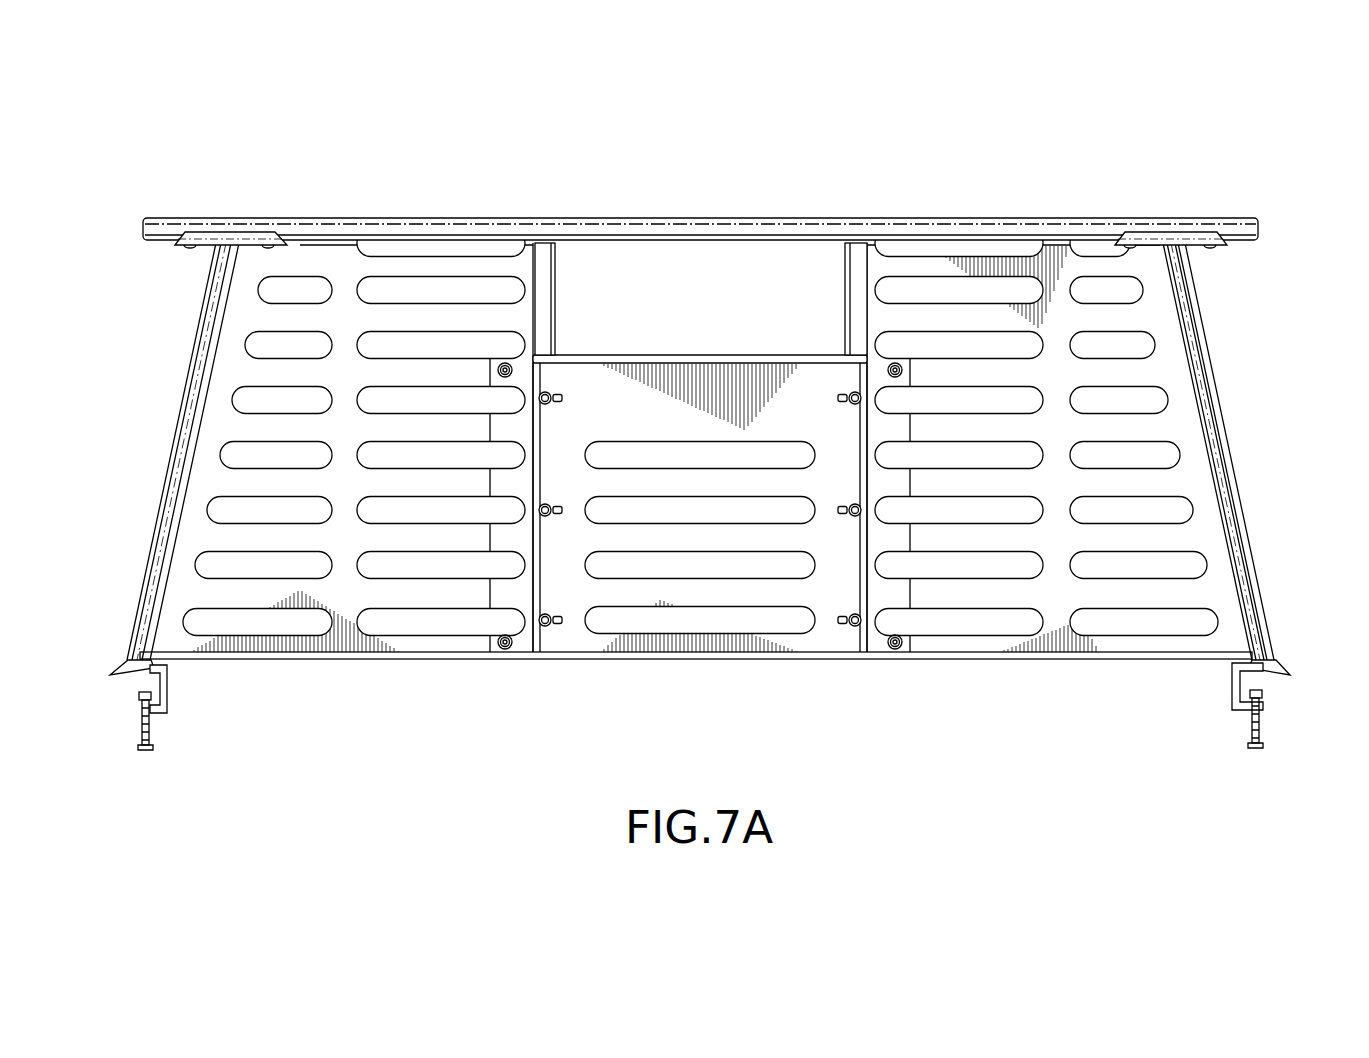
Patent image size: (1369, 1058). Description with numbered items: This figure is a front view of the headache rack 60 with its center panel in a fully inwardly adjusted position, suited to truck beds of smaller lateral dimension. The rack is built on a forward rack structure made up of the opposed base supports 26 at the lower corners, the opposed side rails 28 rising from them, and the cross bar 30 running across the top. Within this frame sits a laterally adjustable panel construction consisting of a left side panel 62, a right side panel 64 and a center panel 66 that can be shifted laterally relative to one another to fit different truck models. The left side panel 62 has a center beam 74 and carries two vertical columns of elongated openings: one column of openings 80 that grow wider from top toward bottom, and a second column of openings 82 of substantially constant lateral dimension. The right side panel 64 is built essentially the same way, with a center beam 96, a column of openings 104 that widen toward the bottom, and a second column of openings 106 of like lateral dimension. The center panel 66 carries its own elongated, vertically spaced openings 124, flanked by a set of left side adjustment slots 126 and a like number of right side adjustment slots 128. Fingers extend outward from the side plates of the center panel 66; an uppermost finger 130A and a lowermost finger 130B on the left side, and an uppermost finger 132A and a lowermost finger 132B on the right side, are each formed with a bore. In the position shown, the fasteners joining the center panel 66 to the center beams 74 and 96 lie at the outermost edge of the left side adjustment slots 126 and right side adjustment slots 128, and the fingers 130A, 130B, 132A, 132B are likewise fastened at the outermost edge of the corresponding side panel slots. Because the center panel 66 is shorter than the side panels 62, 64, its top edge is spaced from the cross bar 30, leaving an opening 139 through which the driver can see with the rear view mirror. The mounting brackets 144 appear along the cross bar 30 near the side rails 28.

The headache rack 60 is at (699, 446).
The base supports 26 is at (110, 707).
The side rails 28 is at (152, 535).
The cross bar 30 is at (1257, 228).
The left side panel 62 is at (326, 473).
The right side panel 64 is at (1042, 464).
The center panel 66 is at (700, 458).
The center beam 74 is at (550, 260).
The openings 80 is at (245, 398).
The openings 82 is at (457, 250).
The center beam 96 is at (850, 255).
The openings 104 is at (1093, 570).
The openings 106 is at (987, 340).
The openings 124 is at (777, 496).
The left side adjustment slots 126 is at (558, 508).
The right side adjustment slots 128 is at (840, 392).
The uppermost finger 130A is at (505, 363).
The lowermost finger 130B is at (498, 645).
The uppermost finger 132A is at (900, 362).
The lowermost finger 132B is at (905, 647).
The opening 139 is at (712, 270).
The mounting bracket 144 is at (220, 243).